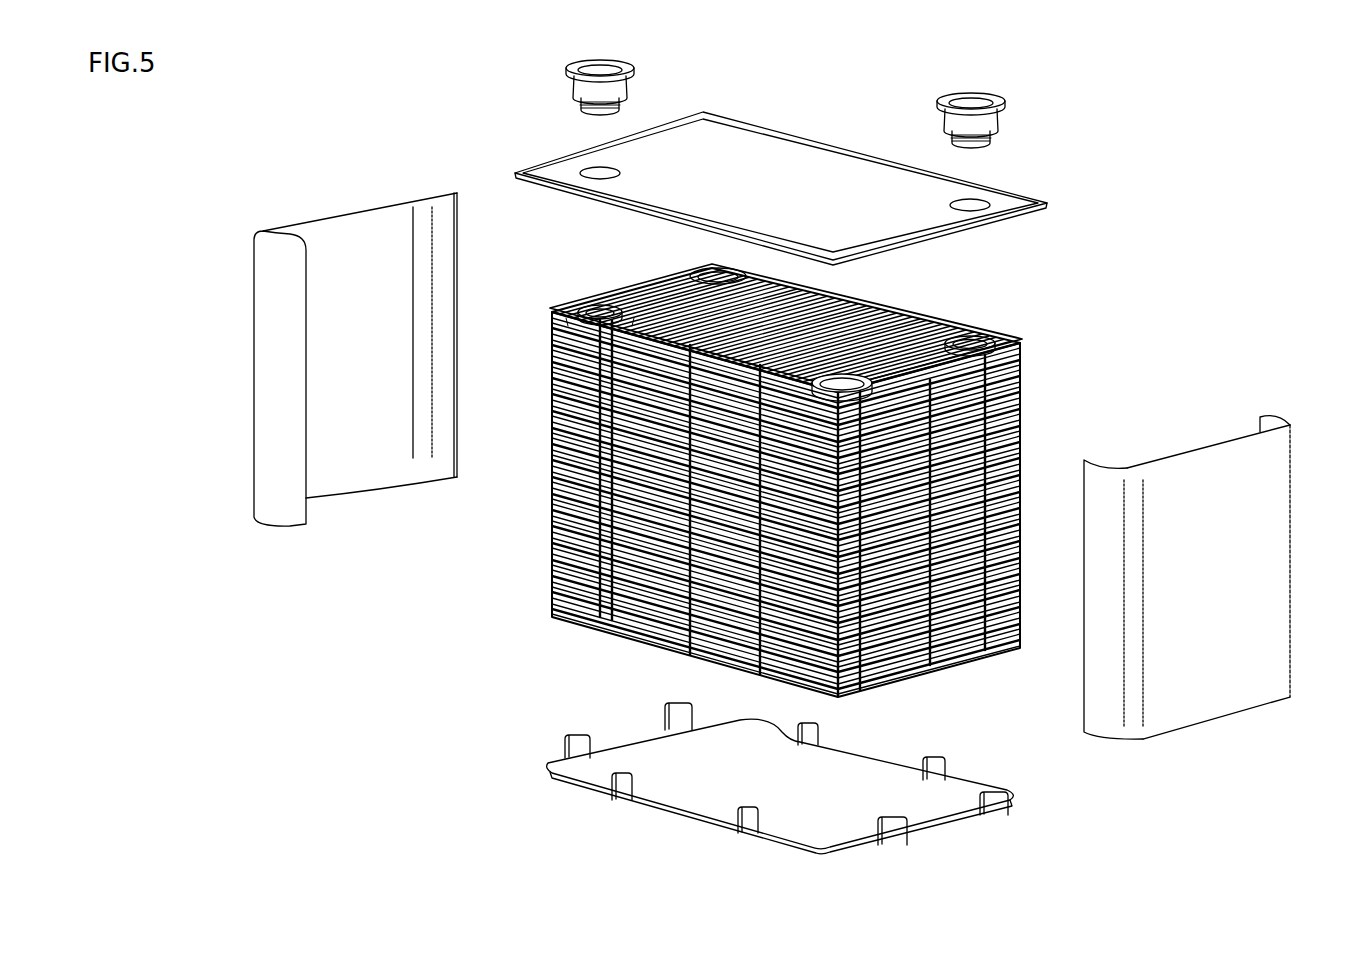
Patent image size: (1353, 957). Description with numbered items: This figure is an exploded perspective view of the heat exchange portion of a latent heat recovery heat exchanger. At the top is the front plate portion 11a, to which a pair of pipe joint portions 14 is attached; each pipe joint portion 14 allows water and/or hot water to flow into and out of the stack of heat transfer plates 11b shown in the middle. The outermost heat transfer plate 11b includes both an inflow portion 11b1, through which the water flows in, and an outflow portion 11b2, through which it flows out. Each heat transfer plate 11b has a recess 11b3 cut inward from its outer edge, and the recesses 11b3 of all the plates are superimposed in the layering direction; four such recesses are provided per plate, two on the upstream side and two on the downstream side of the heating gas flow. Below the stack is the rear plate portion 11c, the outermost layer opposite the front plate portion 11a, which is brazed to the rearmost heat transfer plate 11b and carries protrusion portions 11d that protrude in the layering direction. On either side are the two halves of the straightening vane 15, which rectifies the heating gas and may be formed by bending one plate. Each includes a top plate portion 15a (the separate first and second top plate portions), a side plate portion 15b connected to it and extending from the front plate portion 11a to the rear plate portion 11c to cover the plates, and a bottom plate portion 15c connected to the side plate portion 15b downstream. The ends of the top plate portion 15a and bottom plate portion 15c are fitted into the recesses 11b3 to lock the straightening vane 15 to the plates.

The pipe joint portion 14 is at (580, 90).
The front plate portion 11a is at (850, 167).
The heat transfer plate 11b is at (798, 474).
The inflow portion 11b1 is at (597, 303).
The outflow portion 11b2 is at (772, 288).
The recess 11b3 is at (576, 326).
The rear plate portion 11c is at (780, 774).
The protrusion portion 11d is at (580, 742).
The straightening vane 15 is at (787, 466).
The top plate portion 15a is at (445, 217).
The side plate portion 15b is at (355, 465).
The bottom plate portion 15c is at (272, 505).